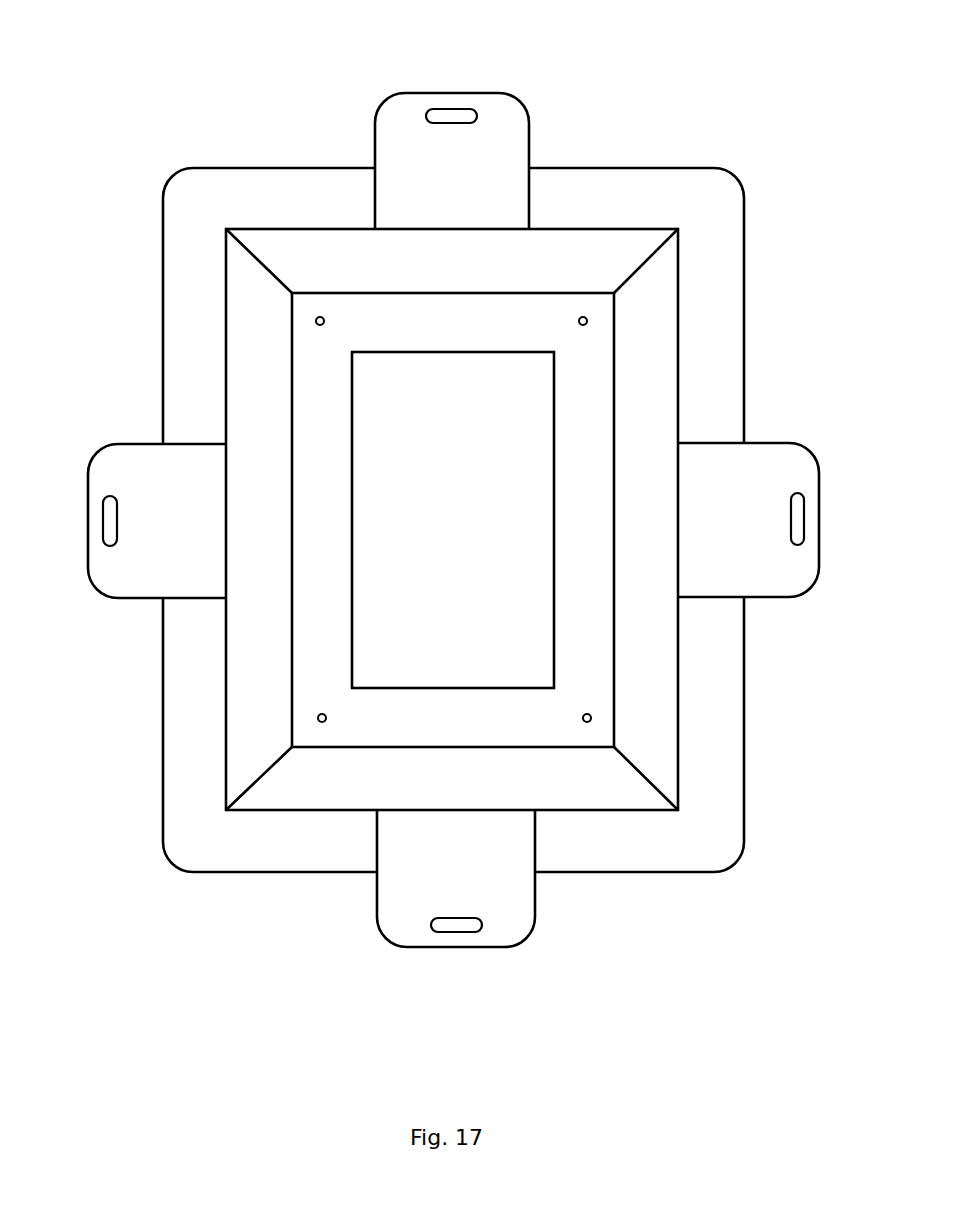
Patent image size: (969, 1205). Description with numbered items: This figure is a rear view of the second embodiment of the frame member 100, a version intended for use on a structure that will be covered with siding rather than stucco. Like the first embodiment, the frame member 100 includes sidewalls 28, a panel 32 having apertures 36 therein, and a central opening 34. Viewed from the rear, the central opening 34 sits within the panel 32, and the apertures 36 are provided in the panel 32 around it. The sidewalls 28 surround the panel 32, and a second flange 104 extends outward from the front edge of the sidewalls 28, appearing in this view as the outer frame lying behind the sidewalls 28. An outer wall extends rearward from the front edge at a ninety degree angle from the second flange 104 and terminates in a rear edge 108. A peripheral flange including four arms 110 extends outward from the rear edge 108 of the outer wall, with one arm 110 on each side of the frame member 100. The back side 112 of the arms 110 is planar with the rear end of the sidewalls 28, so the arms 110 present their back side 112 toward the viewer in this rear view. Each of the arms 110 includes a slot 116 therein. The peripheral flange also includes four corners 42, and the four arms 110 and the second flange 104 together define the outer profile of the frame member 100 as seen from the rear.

The frame member 100 is at (222, 130).
The second flange 104 is at (722, 282).
The corners 42 is at (728, 868).
The sidewalls 28 is at (452, 519).
The panel 32 is at (453, 520).
The central opening 34 is at (453, 520).
The apertures 36 is at (324, 324).
The rear edge 108 is at (452, 229).
The back side 112 is at (453, 520).
The arms 110 is at (455, 93).
The slot 116 is at (478, 116).